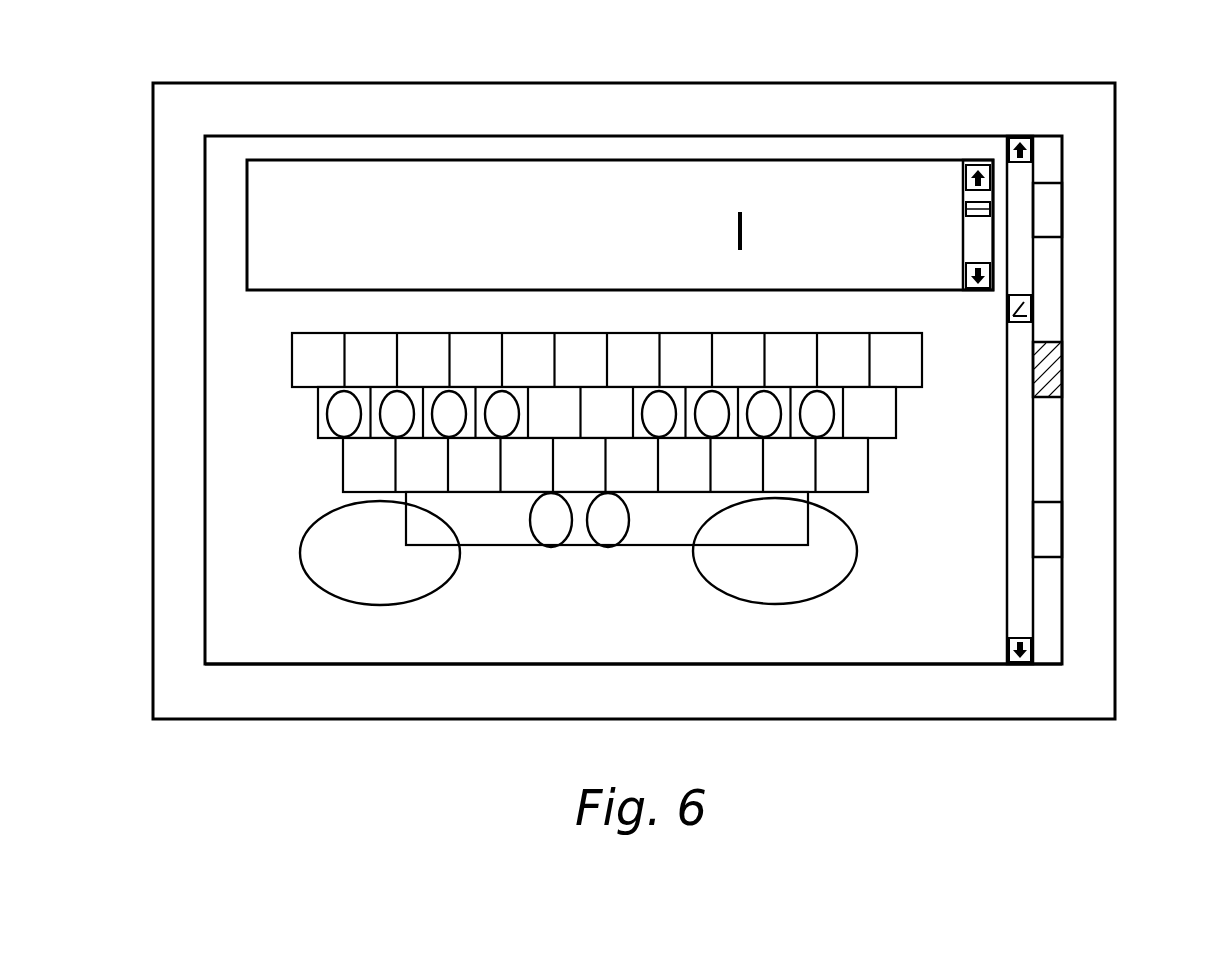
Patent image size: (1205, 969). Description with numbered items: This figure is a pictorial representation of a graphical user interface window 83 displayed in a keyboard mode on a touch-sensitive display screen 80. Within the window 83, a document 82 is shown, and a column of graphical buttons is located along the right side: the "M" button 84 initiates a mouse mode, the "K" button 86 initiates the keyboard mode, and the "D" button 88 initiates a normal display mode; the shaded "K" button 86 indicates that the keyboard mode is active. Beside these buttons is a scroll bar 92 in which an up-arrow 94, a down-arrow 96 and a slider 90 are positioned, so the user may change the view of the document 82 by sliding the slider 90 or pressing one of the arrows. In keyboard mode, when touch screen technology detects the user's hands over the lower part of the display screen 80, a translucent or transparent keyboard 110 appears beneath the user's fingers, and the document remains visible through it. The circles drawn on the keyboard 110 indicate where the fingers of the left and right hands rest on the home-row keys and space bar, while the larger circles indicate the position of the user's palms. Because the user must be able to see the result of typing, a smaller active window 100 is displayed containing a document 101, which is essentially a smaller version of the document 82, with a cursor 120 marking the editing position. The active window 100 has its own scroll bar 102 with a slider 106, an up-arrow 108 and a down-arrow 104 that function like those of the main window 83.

The display screen 80 is at (212, 42).
The document 82 is at (226, 430).
The graphical user interface window 83 is at (330, 665).
The "M" button 84 is at (1062, 210).
The "K" button 86 is at (1062, 365).
The "D" button 88 is at (1062, 530).
The slider 90 is at (1020, 307).
The scroll bar 92 is at (1017, 460).
The up-arrow 94 is at (1007, 150).
The down-arrow 96 is at (1007, 646).
The active window 100 is at (403, 160).
The document 101 is at (294, 196).
The scroll bar 102 is at (977, 242).
The down-arrow 104 is at (963, 272).
The slider 106 is at (963, 212).
The up-arrow 108 is at (963, 175).
The keyboard 110 is at (318, 420).
The cursor 120 is at (740, 212).